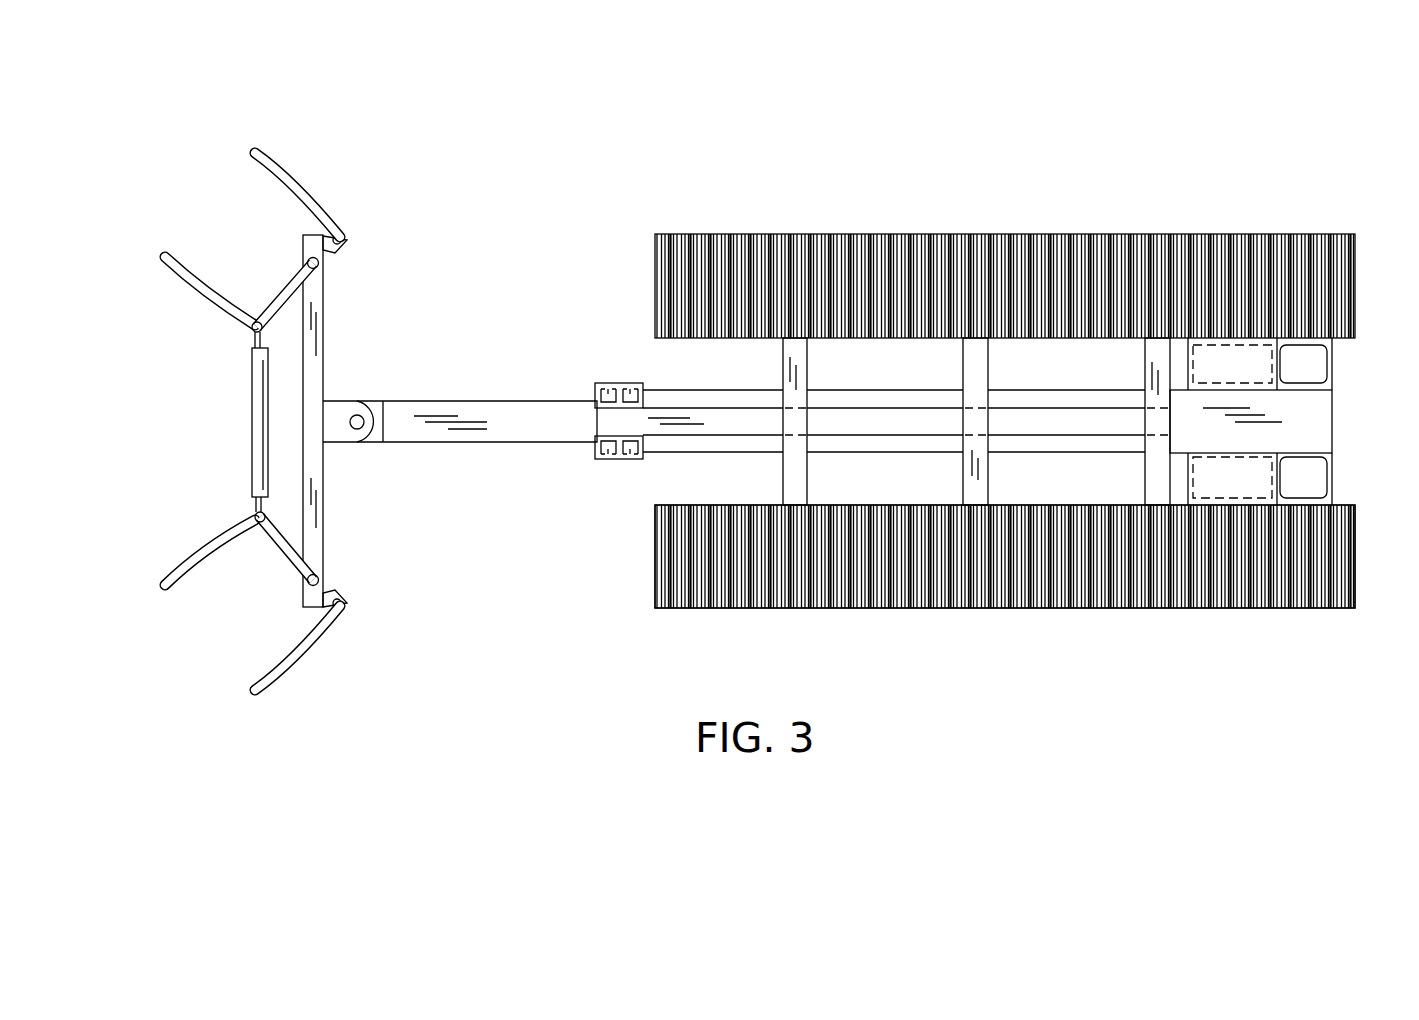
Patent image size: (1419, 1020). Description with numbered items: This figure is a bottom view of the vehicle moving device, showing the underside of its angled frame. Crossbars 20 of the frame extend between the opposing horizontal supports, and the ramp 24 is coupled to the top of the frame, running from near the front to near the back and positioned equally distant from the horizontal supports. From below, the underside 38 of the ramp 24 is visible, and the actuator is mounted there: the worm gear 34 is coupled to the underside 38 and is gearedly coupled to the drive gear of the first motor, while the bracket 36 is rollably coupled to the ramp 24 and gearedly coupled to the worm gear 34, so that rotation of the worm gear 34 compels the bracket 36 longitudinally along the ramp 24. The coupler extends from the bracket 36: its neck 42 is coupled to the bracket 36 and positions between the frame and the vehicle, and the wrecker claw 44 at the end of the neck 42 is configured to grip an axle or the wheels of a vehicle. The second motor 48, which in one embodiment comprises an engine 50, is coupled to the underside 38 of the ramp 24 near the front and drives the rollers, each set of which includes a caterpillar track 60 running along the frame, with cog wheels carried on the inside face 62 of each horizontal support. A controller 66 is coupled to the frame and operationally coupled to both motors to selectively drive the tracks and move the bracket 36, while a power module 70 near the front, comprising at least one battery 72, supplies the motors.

The crossbars 20 is at (1160, 375).
The ramp 24 is at (670, 397).
The worm gear 34 is at (673, 423).
The bracket 36 is at (603, 387).
The underside of the ramp 38 is at (708, 445).
The neck 42 is at (458, 413).
The wrecker claw 44 is at (210, 537).
The second motor 48 is at (1310, 357).
The engine 50 is at (1320, 378).
The caterpillar track 60 is at (1135, 253).
The inside face 62 is at (930, 510).
The controller 66 is at (1255, 355).
The power module 70 is at (1248, 478).
The battery 72 is at (1227, 487).